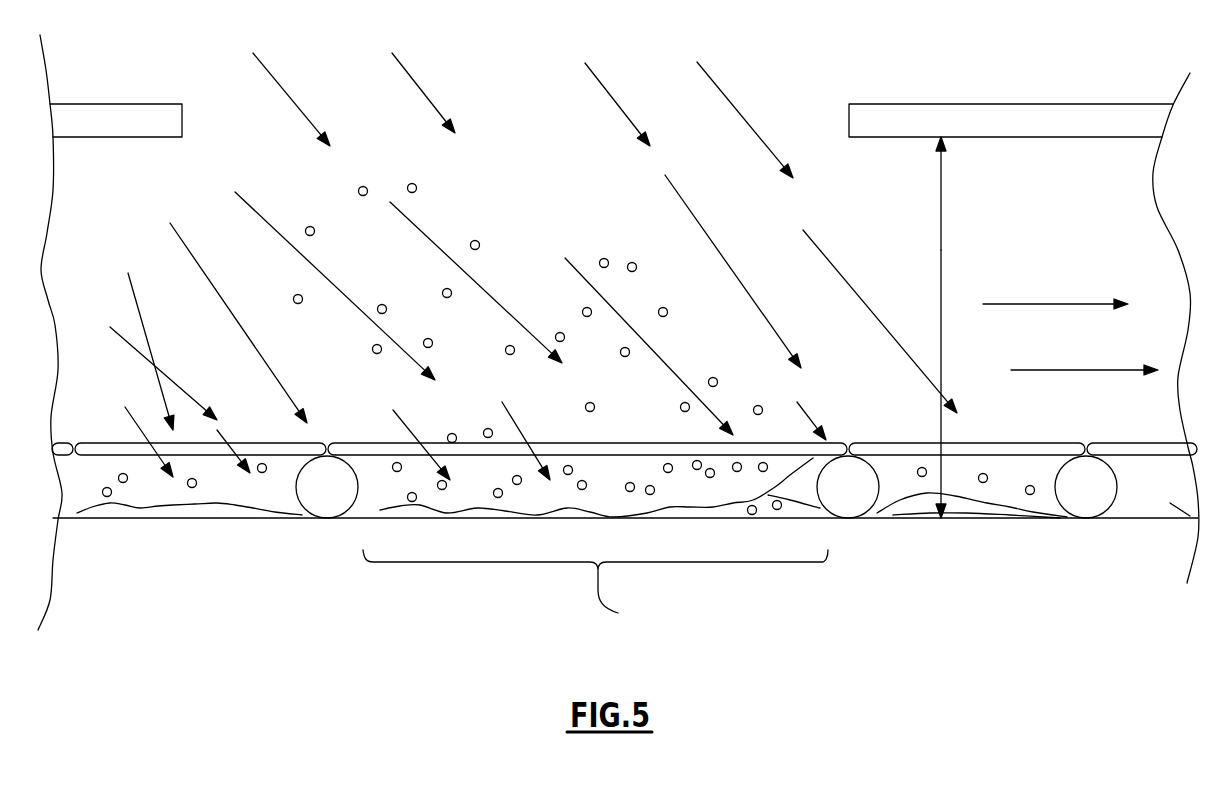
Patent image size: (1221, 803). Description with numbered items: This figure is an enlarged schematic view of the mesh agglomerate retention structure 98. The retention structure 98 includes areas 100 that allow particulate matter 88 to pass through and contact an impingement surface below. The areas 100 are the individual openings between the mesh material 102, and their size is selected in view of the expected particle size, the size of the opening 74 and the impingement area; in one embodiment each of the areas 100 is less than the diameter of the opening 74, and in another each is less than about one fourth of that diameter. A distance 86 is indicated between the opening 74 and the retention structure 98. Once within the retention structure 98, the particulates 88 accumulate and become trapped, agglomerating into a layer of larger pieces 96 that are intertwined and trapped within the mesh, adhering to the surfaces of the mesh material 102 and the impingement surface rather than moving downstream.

The opening 74 is at (814, 108).
The target-to-substrate distance 86 is at (941, 250).
The particulate matter 88 is at (733, 360).
The layer of larger pieces 96 is at (192, 508).
The mesh agglomerate retention structure 98 is at (985, 452).
The areas 100 is at (595, 589).
The mesh material 102 is at (328, 505).